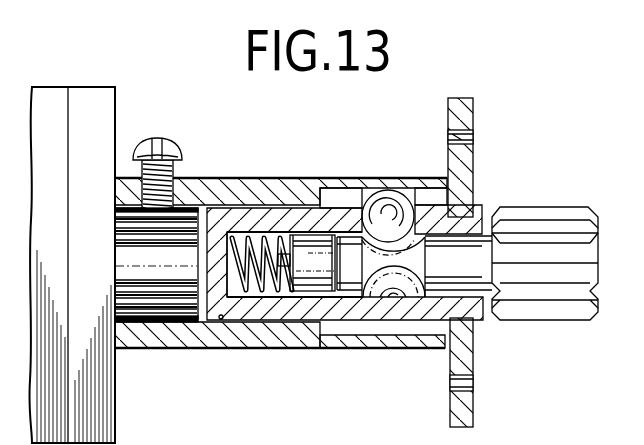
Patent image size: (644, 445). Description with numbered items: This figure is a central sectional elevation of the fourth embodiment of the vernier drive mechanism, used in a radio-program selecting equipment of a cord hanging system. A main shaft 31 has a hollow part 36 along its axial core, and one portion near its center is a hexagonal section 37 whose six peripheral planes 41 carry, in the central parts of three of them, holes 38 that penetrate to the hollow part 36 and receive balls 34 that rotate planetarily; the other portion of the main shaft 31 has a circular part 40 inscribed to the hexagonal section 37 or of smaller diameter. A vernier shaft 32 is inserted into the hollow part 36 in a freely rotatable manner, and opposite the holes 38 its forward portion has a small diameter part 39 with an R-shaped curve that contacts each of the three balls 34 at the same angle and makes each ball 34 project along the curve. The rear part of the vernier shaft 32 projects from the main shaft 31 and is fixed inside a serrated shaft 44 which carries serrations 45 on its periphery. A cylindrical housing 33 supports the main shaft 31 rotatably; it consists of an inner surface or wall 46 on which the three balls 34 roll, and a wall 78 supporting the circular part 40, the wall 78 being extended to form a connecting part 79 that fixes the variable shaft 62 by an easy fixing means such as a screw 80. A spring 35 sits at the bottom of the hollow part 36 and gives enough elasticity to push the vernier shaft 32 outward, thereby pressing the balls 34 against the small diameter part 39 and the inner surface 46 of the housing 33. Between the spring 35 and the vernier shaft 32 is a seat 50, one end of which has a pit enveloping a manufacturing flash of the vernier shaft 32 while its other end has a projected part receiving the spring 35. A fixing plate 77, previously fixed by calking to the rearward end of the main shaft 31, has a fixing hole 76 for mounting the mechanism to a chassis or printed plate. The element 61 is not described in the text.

The wall 61 is at (49, 87).
The screw 80 is at (175, 143).
The cylindrical housing 33 is at (214, 190).
The main shaft 31 is at (249, 213).
The hexagonal section 37 is at (282, 210).
The seat 50 is at (307, 232).
The peripheral planes 41 is at (336, 190).
The balls 34 is at (371, 193).
The holes 38 is at (423, 212).
The fixing plate 77 is at (474, 98).
The fixing hole 76 is at (474, 137).
The serrated shaft 44 is at (535, 206).
The serrations 45 is at (559, 302).
The inner surface of the housing 46 is at (463, 295).
The variable shaft 62 is at (143, 303).
The connecting part 79 is at (178, 321).
The circular part 40 is at (221, 321).
The spring 35 is at (258, 297).
The hollow part 36 is at (281, 295).
The wall 78 is at (320, 334).
The vernier shaft 32 is at (393, 269).
The small diameter part 39 is at (404, 298).